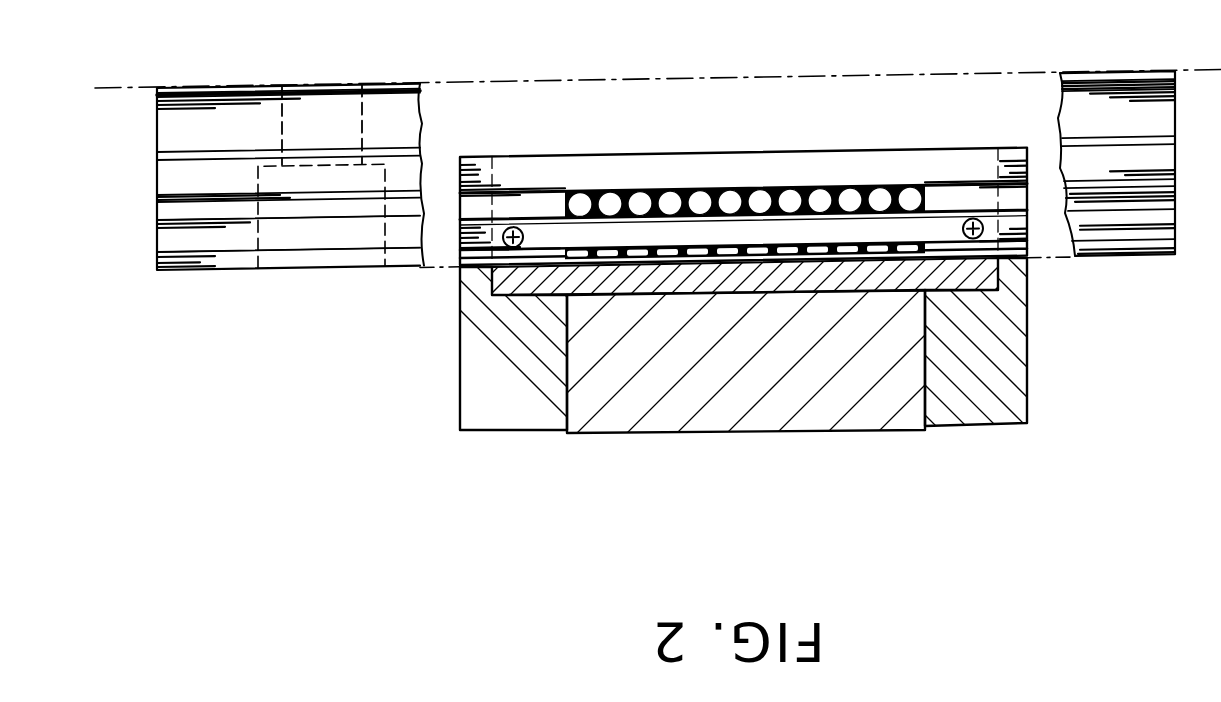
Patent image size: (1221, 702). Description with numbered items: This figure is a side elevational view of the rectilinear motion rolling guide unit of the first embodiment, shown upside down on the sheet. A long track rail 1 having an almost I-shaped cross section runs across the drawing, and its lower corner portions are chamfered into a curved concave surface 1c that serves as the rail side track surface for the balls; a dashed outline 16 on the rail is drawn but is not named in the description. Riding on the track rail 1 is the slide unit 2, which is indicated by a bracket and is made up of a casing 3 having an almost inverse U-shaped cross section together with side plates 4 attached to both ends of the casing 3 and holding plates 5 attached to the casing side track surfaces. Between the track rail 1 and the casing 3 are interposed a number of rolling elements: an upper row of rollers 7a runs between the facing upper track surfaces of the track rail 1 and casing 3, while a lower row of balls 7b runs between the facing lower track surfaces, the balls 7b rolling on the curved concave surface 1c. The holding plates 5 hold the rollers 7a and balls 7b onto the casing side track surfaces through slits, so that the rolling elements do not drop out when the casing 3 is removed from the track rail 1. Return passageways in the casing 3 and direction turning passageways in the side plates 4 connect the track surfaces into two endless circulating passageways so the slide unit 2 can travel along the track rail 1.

The track rail 1 is at (230, 88).
The curved concave surface 1c is at (217, 223).
The rail mounting portion 16 is at (288, 258).
The slide unit 2 is at (520, 527).
The casing 3 is at (710, 432).
The side plates 4 is at (480, 430).
The holding plates 5 is at (955, 148).
The rollers 7a is at (859, 259).
The balls 7b is at (648, 191).